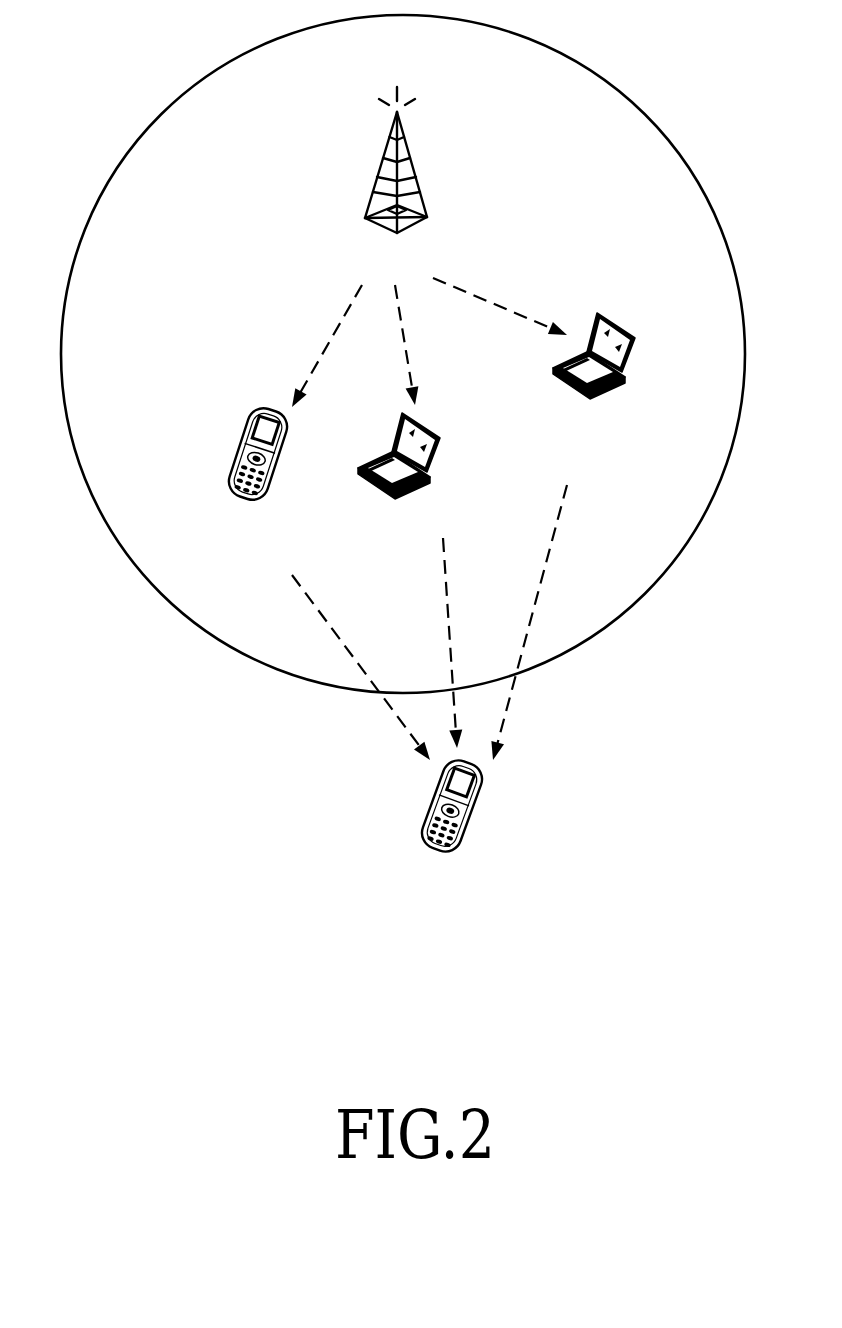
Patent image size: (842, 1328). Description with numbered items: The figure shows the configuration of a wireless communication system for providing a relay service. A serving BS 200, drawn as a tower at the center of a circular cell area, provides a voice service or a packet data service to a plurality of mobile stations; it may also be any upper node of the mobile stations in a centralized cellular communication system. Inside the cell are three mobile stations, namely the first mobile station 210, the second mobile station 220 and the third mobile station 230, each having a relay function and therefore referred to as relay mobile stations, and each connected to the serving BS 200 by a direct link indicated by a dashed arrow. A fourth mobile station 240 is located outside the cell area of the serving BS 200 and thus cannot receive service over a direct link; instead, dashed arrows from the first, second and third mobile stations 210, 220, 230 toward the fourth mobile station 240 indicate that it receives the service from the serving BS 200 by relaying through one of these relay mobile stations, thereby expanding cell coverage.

The serving BS 200 is at (399, 177).
The MS1 210 is at (399, 488).
The MS2 220 is at (594, 389).
The MS3 230 is at (254, 484).
The MS4 240 is at (451, 840).